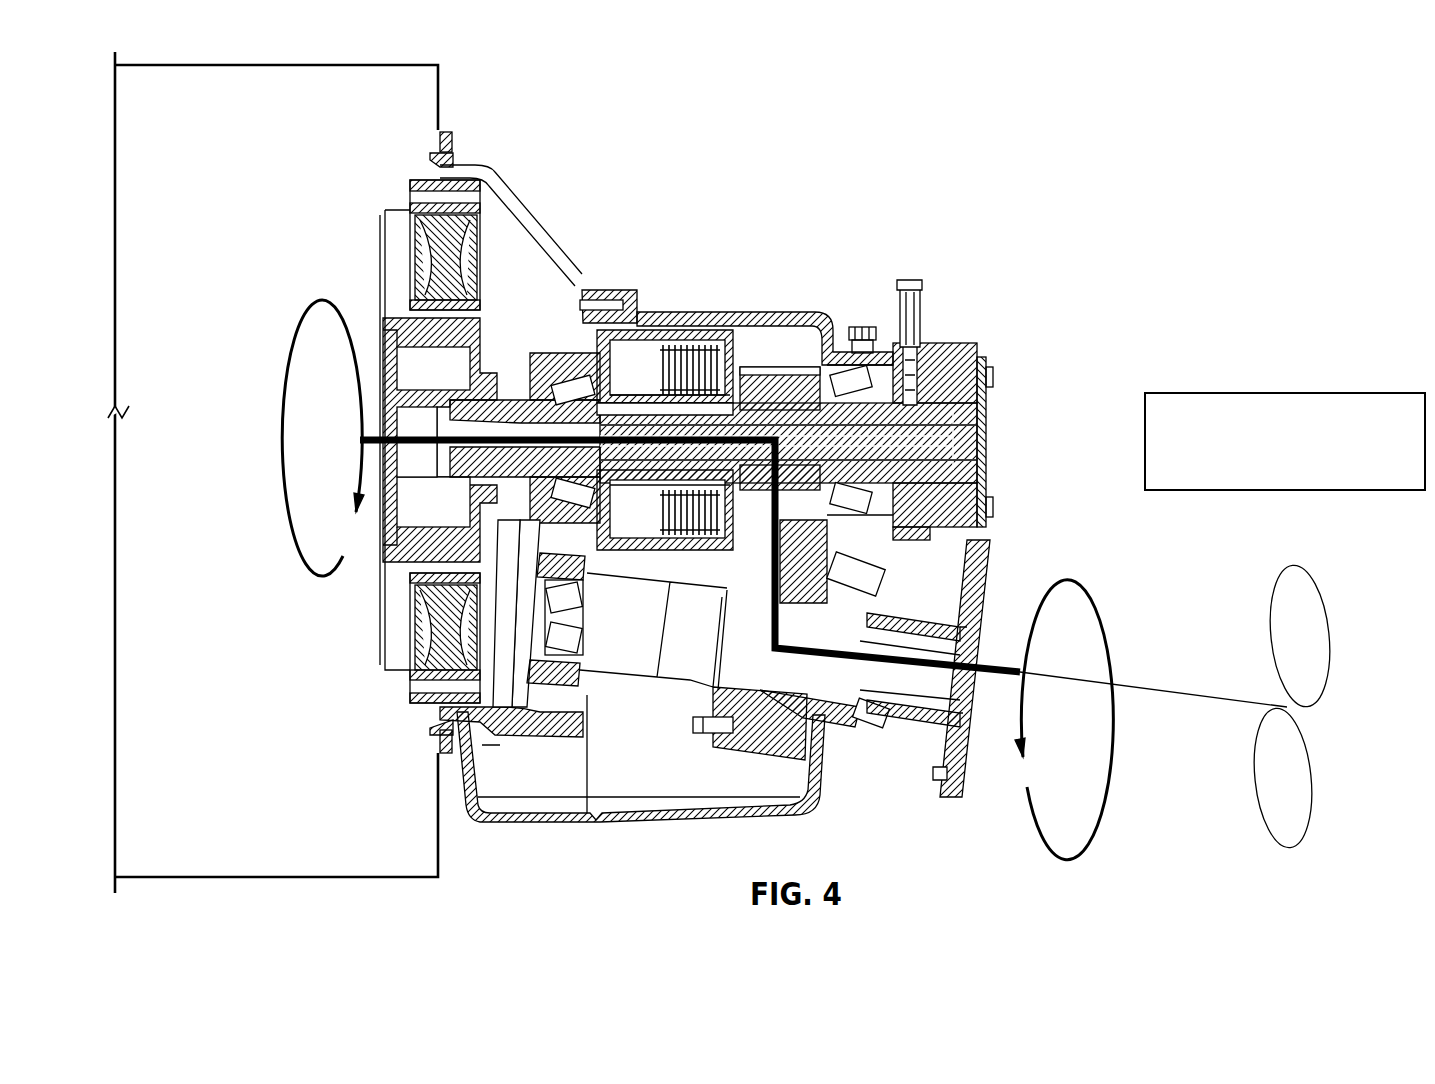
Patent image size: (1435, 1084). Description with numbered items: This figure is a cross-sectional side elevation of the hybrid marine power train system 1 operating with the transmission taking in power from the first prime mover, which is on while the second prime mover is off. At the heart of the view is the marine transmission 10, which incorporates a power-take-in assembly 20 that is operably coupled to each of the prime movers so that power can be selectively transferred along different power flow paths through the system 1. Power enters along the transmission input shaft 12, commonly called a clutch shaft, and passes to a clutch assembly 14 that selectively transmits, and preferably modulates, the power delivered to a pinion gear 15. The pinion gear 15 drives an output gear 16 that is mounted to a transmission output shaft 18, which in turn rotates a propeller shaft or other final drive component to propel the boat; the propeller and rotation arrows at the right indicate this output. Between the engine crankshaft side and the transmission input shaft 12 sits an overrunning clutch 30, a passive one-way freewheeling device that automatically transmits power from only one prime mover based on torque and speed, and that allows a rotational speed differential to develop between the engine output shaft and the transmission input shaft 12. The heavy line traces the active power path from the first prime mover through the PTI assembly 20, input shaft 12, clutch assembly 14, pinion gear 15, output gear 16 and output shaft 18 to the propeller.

The hybrid marine power train system 1 is at (1092, 130).
The marine transmission 10 is at (718, 150).
The transmission input shaft 12 is at (798, 402).
The clutch assembly 14 is at (698, 327).
The pinion gear 15 is at (763, 369).
The output gear 16 is at (776, 673).
The transmission output shaft 18 is at (800, 705).
The power-take-in (PTI) assembly 20 is at (533, 279).
The overrunning clutch 30 is at (386, 551).